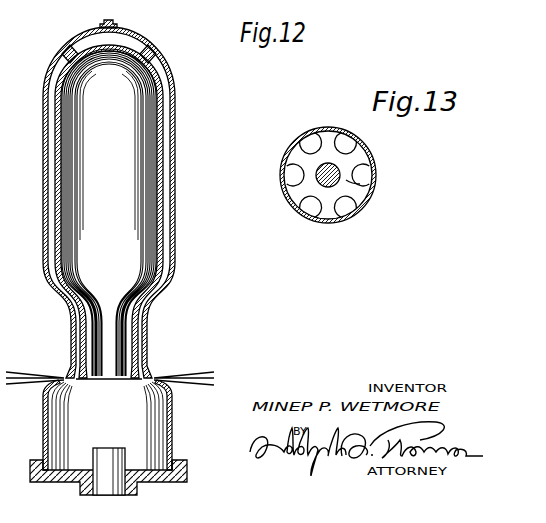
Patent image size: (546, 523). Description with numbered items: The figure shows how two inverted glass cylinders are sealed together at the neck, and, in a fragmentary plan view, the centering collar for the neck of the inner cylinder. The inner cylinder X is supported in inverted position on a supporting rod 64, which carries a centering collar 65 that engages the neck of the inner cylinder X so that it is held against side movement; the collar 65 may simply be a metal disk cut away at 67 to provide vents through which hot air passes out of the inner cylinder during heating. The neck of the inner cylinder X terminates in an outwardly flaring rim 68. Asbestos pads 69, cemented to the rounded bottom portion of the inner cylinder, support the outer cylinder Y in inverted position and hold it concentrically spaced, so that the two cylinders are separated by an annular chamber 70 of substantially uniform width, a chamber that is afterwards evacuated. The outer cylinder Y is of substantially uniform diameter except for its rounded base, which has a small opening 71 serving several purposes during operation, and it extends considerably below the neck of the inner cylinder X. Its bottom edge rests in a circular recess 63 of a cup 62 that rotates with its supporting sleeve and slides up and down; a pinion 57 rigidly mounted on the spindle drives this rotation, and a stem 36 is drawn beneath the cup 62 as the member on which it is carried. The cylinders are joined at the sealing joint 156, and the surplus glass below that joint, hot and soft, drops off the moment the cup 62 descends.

In FIG. 12, the outer cylinder Y is at (176, 90).
In FIG. 12, the inner cylinder X is at (163, 172).
In FIG. 13, the inner cylinder X is at (374, 162).
In FIG. 12, the annular chamber 70 is at (54, 193).
In FIG. 12, the asbestos pads 69 is at (65, 52).
In FIG. 12, the small opening 71 is at (115, 22).
In FIG. 12, the sealing joint 156 is at (62, 375).
In FIG. 12, the pinion 57 is at (43, 432).
In FIG. 12, the outwardly flaring rim 68 is at (76, 383).
In FIG. 12, the cup 62 is at (187, 474).
In FIG. 12, the stem 36 is at (105, 458).
In FIG. 12, the circular recess 63 is at (132, 470).
In FIG. 13, the supporting rod 64 is at (322, 178).
In FIG. 13, the centering collar 65 is at (360, 184).
In FIG. 13, the cut-away vents 67 is at (305, 142).